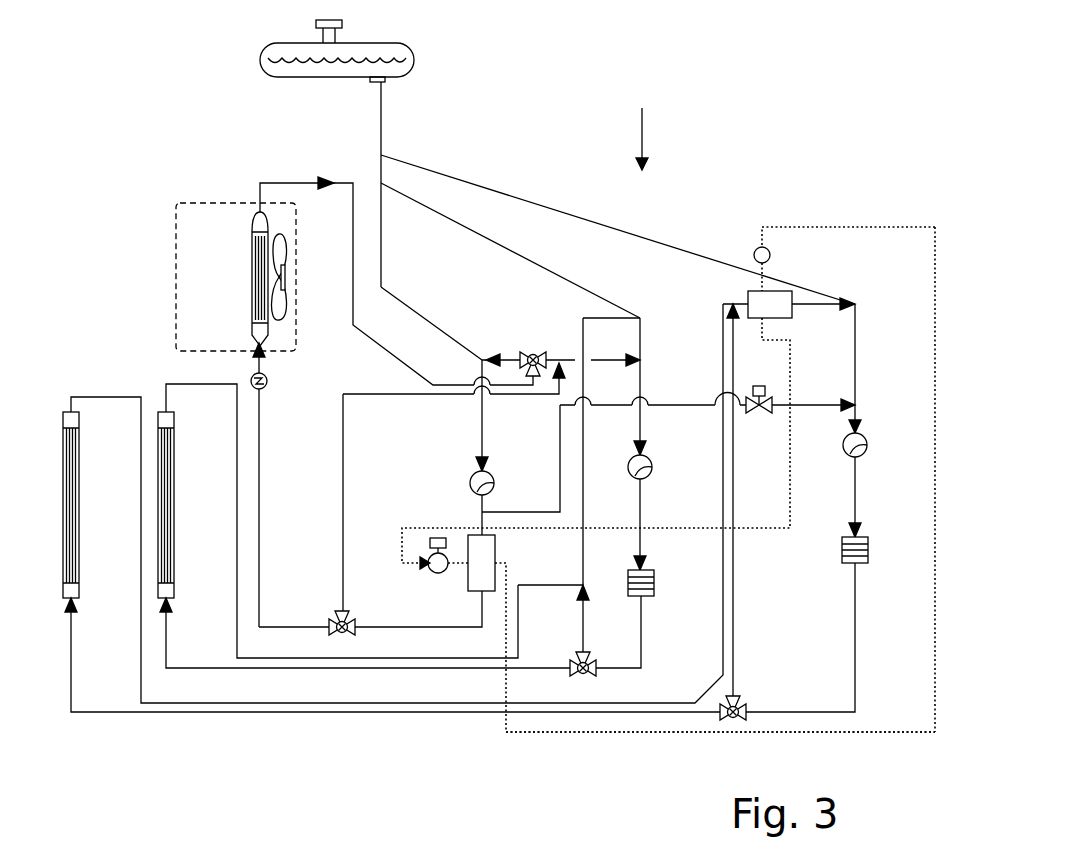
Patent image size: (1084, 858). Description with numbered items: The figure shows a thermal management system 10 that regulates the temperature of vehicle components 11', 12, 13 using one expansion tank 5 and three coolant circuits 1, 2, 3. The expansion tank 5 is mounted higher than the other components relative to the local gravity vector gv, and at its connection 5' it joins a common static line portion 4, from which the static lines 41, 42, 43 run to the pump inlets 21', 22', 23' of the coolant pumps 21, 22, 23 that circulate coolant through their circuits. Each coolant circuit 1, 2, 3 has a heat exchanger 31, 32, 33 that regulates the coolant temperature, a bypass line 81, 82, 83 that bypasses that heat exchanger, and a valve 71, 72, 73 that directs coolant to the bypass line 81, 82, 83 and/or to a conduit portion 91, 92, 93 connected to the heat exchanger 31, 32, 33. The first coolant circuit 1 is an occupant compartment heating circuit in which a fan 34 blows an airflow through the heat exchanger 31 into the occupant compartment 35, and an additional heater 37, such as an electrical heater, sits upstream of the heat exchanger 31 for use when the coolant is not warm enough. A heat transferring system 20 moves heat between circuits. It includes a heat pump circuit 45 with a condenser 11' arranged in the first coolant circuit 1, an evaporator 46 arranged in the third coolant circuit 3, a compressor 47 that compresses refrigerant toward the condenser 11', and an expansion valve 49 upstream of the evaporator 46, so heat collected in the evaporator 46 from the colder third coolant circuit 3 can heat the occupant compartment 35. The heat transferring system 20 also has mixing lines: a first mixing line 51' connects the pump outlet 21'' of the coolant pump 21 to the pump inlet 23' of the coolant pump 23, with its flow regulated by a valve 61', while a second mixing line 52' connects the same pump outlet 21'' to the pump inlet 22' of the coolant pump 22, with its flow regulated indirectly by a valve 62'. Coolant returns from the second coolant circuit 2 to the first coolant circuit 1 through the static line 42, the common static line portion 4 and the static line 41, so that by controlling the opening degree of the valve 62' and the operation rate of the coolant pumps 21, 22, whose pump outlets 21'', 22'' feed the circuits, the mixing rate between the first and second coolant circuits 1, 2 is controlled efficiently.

The first coolant circuit 1 is at (480, 420).
The second coolant circuit 2 is at (641, 340).
The third coolant circuit 3 is at (857, 342).
The common static line portion 4 is at (381, 135).
The expansion tank 5 is at (362, 48).
The tank outlet 5' is at (409, 94).
The thermal management system 10 is at (744, 202).
The condenser 11' is at (517, 563).
The vehicle component 12 is at (652, 580).
The vehicle component 13 is at (860, 545).
The heat transferring system 20 is at (512, 753).
The coolant pump 21 is at (515, 470).
The pump inlet 21' is at (519, 448).
The pump outlet 21'' is at (440, 490).
The coolant pump 22 is at (667, 511).
The pump inlet 22' is at (679, 435).
The pump outlet 22'' is at (683, 498).
The coolant pump 23 is at (880, 483).
The pump inlet 23' is at (894, 410).
The heat exchanger 31 is at (258, 222).
The heat exchanger 32 is at (174, 505).
The heat exchanger 33 is at (79, 505).
The fan 34 is at (286, 250).
The occupant compartment 35 is at (189, 294).
The additional heater 37 is at (268, 380).
The static line 41 is at (418, 316).
The static line 42 is at (505, 250).
The static line 43 is at (550, 206).
The heat pump circuit 45 is at (686, 732).
The evaporator 46 is at (780, 312).
The compressor 47 is at (438, 573).
The expansion valve 49 is at (770, 255).
The first mixing line 51' is at (707, 386).
The second mixing line 52' is at (463, 344).
The valve 61' is at (760, 381).
The valve 62' is at (561, 340).
The valve 71 is at (350, 617).
The valve 72 is at (590, 658).
The valve 73 is at (740, 702).
The bypass line 81 is at (343, 452).
The bypass line 82 is at (583, 623).
The bypass line 83 is at (735, 633).
The conduit portion 91 is at (295, 626).
The conduit portion 92 is at (197, 667).
The conduit portion 93 is at (95, 708).
The local gravity vector gv is at (642, 128).